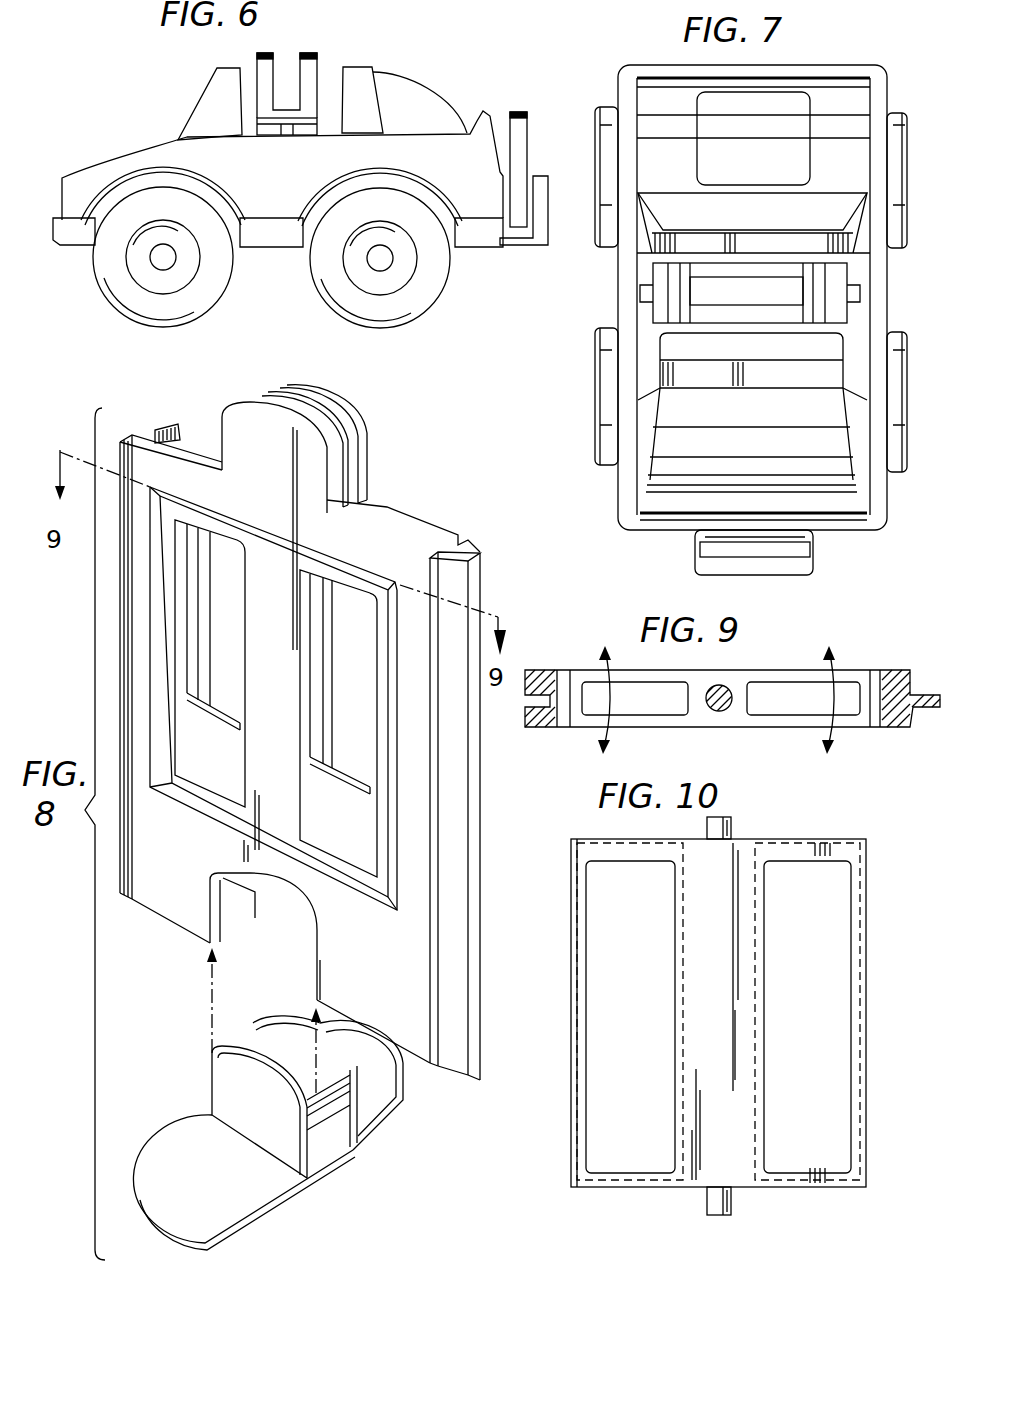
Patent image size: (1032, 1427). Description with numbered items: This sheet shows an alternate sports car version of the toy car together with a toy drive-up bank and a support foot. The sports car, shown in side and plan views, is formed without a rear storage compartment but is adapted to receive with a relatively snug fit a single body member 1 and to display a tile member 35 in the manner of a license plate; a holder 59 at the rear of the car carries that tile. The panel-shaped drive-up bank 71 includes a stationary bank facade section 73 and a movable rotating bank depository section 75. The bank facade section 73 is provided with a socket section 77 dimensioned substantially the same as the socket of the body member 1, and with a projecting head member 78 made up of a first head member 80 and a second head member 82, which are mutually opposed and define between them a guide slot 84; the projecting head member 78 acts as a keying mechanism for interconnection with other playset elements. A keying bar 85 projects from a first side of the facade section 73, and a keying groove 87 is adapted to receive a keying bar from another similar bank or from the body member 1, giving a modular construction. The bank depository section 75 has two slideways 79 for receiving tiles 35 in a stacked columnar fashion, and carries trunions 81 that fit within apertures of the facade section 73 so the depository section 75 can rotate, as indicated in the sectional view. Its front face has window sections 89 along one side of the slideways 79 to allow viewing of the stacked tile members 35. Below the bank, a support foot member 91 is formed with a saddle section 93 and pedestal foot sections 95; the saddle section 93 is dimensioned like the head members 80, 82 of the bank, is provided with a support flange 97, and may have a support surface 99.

In FIG. 6, the body member 1 is at (334, 40).
In FIG. 7, the body member 1 is at (858, 280).
In FIG. 6, the tile member 35 is at (524, 123).
In FIG. 7, the tile member 35 is at (810, 550).
In FIG. 8, the tile member 35 is at (215, 735).
In FIG. 6, the holder bracket 59 is at (544, 188).
In FIG. 7, the holder bracket 59 is at (765, 576).
In FIG. 8, the drive-up bank 71 is at (487, 817).
In FIG. 8, the bank facade section 73 is at (175, 870).
In FIG. 8, the bank depository section 75 is at (284, 778).
In FIG. 9, the bank depository section 75 is at (773, 670).
In FIG. 10, the bank depository section 75 is at (882, 883).
In FIG. 8, the socket section 77 is at (252, 950).
In FIG. 8, the projecting head member 78 is at (400, 456).
In FIG. 8, the slideways 79 is at (343, 641).
In FIG. 9, the slideways 79 is at (637, 703).
In FIG. 8, the first head member 80 is at (240, 420).
In FIG. 9, the trunions 81 is at (718, 728).
In FIG. 10, the trunions 81 is at (728, 832).
In FIG. 8, the second head member 82 is at (322, 407).
In FIG. 8, the guide slot 84 is at (278, 398).
In FIG. 8, the keying bar 85 is at (477, 583).
In FIG. 8, the keying groove 87 is at (153, 432).
In FIG. 10, the window sections 89 is at (833, 998).
In FIG. 8, the support foot member 91 is at (380, 1161).
In FIG. 8, the saddle section 93 is at (223, 1088).
In FIG. 8, the foot sections 95 is at (390, 1093).
In FIG. 8, the support flange 97 is at (267, 1022).
In FIG. 8, the support surface 99 is at (280, 1040).